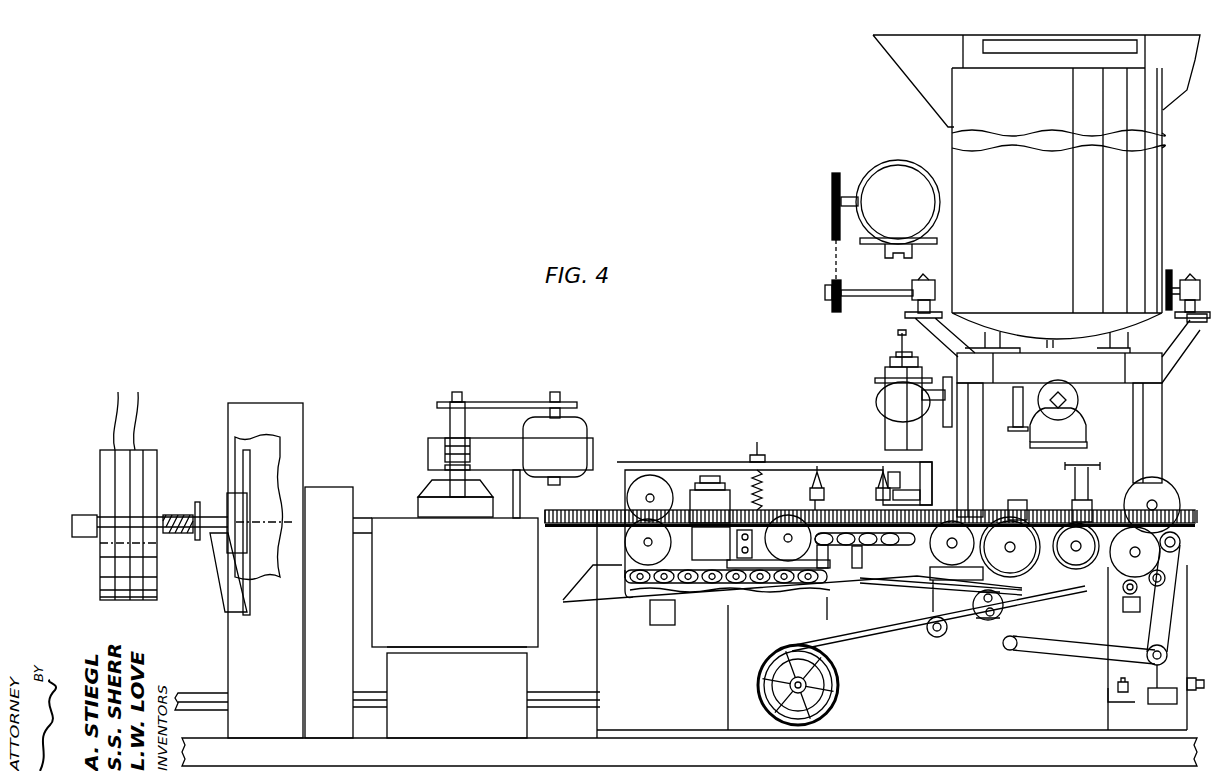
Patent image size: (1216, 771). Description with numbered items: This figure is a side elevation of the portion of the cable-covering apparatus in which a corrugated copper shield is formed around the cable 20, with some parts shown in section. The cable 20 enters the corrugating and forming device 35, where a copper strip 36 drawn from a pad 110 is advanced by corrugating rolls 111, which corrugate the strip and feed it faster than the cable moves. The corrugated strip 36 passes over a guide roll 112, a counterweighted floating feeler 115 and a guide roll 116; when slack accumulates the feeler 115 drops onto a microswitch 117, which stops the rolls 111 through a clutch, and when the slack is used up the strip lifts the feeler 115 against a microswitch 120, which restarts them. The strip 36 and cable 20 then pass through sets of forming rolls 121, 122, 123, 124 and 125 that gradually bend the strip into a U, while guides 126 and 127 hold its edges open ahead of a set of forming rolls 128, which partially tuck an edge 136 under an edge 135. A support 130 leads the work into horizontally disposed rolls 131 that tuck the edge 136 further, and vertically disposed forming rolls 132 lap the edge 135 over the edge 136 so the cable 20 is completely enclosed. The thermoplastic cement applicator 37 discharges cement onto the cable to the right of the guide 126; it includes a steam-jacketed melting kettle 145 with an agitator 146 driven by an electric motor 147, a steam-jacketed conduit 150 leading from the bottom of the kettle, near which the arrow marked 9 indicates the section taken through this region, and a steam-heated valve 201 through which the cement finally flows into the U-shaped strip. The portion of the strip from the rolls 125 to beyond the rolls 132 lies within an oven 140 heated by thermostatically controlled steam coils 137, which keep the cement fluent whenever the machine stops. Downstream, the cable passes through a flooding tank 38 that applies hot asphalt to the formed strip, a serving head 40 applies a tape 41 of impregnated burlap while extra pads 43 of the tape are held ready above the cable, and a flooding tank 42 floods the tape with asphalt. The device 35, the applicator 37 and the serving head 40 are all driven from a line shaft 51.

The supply pipe 9 is at (900, 348).
The cable 20 is at (1050, 508).
The corrugating and forming device 35 is at (757, 459).
The copper strip 36 is at (883, 635).
The thermoplastic cement applicator 37 is at (876, 397).
The flooding tank 38 is at (494, 403).
The serving head 40 is at (214, 499).
The tape 41 is at (222, 592).
The flooding tank 42 is at (157, 552).
The extra pads 43 is at (124, 419).
The line shaft 51 is at (562, 692).
The pad 110 is at (838, 678).
The corrugating rolls 111 is at (977, 618).
The guide roll 112 is at (1124, 604).
The floating feeler 115 is at (1120, 675).
The guide roll 116 is at (1192, 515).
The microswitch 117 is at (1118, 698).
The microswitch 120 is at (1130, 607).
The set of forming rolls 121 is at (1128, 490).
The set of forming rolls 122 is at (1125, 585).
The set of forming rolls 123 is at (1072, 568).
The set of forming rolls 124 is at (1036, 572).
The set of forming rolls 125 is at (925, 565).
The guide 126 is at (880, 502).
The guide 127 is at (824, 495).
The set of forming rolls 128 is at (812, 500).
The support 130 is at (736, 560).
The horizontally disposed rolls 131 is at (689, 485).
The vertically disposed forming rolls 132 is at (645, 474).
The edge 135 is at (793, 515).
The edge 136 is at (750, 480).
The steam coils 137 is at (706, 583).
The oven 140 is at (668, 460).
The steam-jacketed melting kettle 145 is at (950, 126).
The agitator 146 is at (870, 298).
The electric motor 147 is at (893, 170).
The steam-jacketed conduit 150 is at (1000, 418).
The steam-heated valve 201 is at (915, 466).